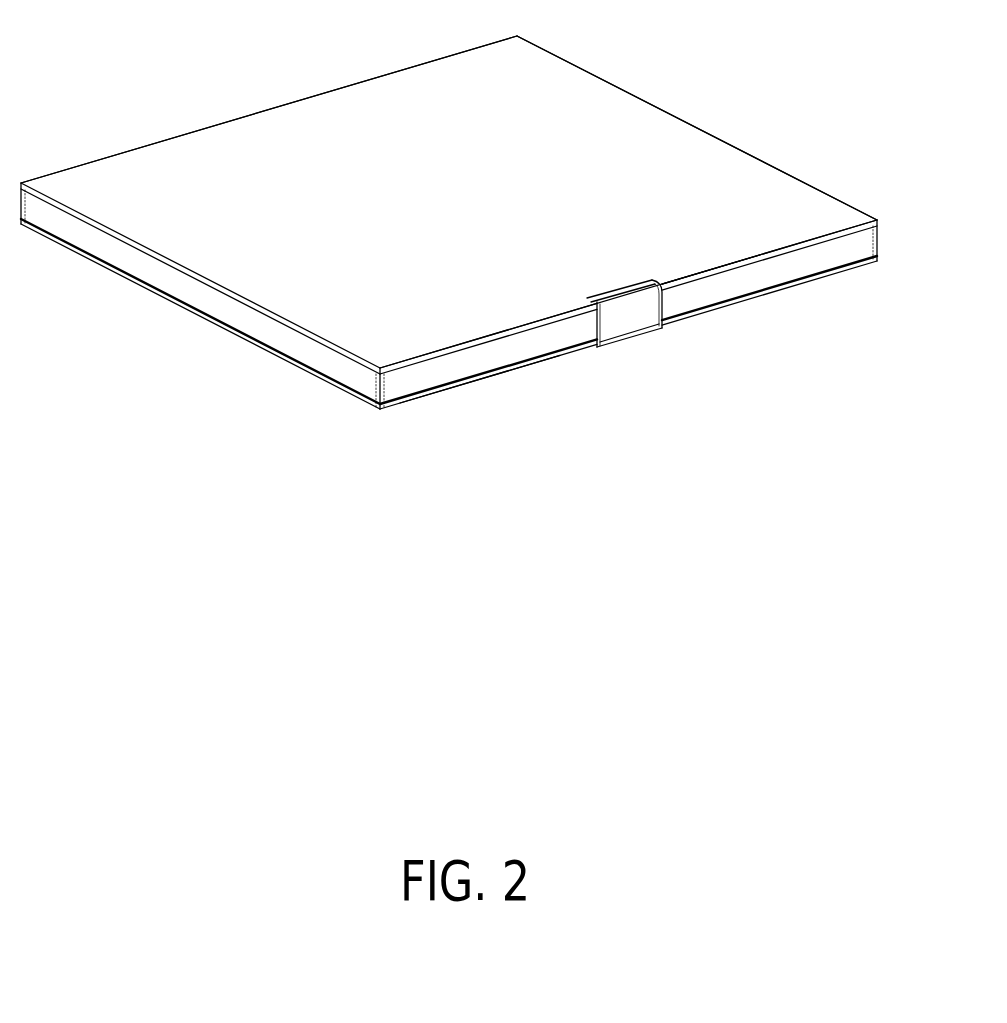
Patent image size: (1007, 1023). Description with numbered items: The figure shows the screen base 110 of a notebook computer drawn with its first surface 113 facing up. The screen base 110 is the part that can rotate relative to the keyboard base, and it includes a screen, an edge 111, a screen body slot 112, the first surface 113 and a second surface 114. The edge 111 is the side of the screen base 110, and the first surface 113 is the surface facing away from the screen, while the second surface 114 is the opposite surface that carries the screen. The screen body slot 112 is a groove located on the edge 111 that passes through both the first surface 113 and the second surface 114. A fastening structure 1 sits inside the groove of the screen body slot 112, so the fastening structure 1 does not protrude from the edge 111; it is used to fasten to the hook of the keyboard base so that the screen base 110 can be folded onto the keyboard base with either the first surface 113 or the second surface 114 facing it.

The fastening structure 1 is at (633, 306).
The screen base 110 is at (210, 133).
The edge 111 is at (762, 280).
The screen body slot 112 is at (682, 283).
The first surface 113 is at (633, 94).
The second surface 114 is at (495, 400).